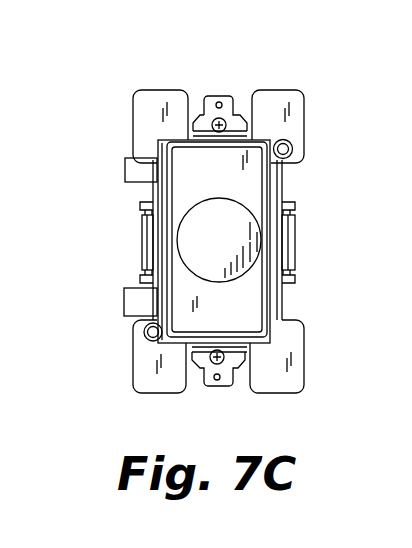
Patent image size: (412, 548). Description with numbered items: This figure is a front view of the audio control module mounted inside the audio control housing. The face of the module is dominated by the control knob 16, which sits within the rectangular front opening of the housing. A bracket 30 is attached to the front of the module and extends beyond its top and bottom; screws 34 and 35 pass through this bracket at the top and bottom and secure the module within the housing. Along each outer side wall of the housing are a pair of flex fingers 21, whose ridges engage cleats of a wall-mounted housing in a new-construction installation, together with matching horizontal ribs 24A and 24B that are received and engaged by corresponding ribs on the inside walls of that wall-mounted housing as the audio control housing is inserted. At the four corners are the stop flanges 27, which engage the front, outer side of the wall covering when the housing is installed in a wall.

The control knob 16 is at (195, 267).
The flex fingers 21 is at (142, 240).
The horizontal rib 24A is at (140, 204).
The horizontal rib 24B is at (140, 280).
The stop flanges 27 is at (142, 97).
The bracket 30 is at (215, 95).
The screw 34 is at (225, 120).
The screw 35 is at (210, 362).